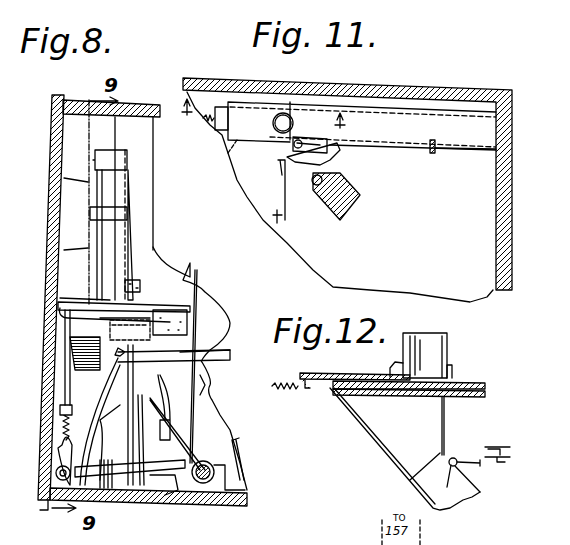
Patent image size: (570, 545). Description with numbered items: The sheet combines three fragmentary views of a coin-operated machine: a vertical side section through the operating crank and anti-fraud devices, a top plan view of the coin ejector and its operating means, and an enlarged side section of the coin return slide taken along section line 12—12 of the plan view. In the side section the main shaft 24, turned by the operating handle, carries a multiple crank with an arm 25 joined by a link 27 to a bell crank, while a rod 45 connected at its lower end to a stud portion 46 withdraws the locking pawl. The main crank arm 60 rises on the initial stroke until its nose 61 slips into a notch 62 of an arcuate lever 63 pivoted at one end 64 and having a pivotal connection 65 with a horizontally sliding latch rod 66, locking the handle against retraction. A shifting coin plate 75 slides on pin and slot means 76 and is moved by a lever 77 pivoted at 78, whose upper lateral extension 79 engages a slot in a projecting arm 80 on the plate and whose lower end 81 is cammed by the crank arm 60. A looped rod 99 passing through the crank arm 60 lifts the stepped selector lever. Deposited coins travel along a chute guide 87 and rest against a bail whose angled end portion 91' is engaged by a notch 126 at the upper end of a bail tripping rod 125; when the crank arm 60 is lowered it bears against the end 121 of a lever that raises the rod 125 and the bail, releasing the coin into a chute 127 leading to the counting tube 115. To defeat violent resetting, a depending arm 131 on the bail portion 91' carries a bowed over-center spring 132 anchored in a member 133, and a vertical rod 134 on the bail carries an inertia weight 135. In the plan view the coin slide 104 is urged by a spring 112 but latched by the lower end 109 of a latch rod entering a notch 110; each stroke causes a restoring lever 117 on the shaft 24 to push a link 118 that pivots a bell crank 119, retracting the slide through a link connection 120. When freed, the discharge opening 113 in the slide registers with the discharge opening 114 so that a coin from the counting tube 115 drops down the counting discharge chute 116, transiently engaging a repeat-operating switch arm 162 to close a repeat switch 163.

In FIG. 11, the section line 12 is at (268, 119).
In FIG. 8, the main shaft 24 is at (212, 477).
In FIG. 8, the arm 25 is at (192, 413).
In FIG. 8, the link 27 is at (202, 383).
In FIG. 8, the rod 45 is at (233, 447).
In FIG. 8, the stud portion 46 is at (218, 468).
In FIG. 8, the main crank lever arm 60 is at (172, 495).
In FIG. 8, the end portion 61 is at (88, 460).
In FIG. 8, the notch 62 is at (100, 421).
In FIG. 8, the lever 63 is at (42, 461).
In FIG. 8, the pivot 64 is at (50, 493).
In FIG. 8, the pivotal connection 65 is at (120, 355).
In FIG. 8, the latch rod 66 is at (197, 352).
In FIG. 8, the shifting coin plate 75 is at (94, 168).
In FIG. 8, the pin and slot means 76 is at (105, 170).
In FIG. 8, the lever 77 is at (95, 257).
In FIG. 8, the pivot 78 is at (130, 286).
In FIG. 8, the upper lateral extension 79 is at (108, 208).
In FIG. 8, the projecting arm 80 is at (70, 218).
In FIG. 8, the lower end 81 is at (128, 440).
In FIG. 8, the chute guide 87 is at (64, 210).
In FIG. 8, the angled end portion 91' is at (111, 326).
In FIG. 8, the double rod member 99 is at (193, 292).
In FIG. 11, the coin slide 104 is at (226, 105).
In FIG. 12, the coin slide 104 is at (310, 374).
In FIG. 11, the lower end portion 109 is at (436, 153).
In FIG. 11, the notch 110 is at (436, 143).
In FIG. 11, the spring 112 is at (208, 124).
In FIG. 12, the spring 112 is at (277, 391).
In FIG. 11, the discharge opening 113 is at (296, 118).
In FIG. 12, the discharge opening 113 is at (432, 396).
In FIG. 11, the discharge opening 114 is at (243, 152).
In FIG. 12, the discharge opening 114 is at (396, 390).
In FIG. 11, the counting tube 115 is at (286, 112).
In FIG. 12, the counting tube 115 is at (450, 352).
In FIG. 12, the counting discharge chute 116 is at (400, 472).
In FIG. 11, the depending restoring lever 117 is at (279, 222).
In FIG. 11, the link 118 is at (283, 196).
In FIG. 11, the bell crank 119 is at (333, 183).
In FIG. 11, the link connection 120 is at (312, 140).
In FIG. 8, the end 121 is at (108, 488).
In FIG. 8, the bail tripping rod 125 is at (104, 300).
In FIG. 8, the notch 126 is at (44, 302).
In FIG. 8, the chute 127 is at (76, 351).
In FIG. 8, the depending arm 131 is at (154, 378).
In FIG. 8, the over-center spring 132 is at (165, 412).
In FIG. 8, the member 133 is at (160, 462).
In FIG. 8, the vertical rod 134 is at (64, 376).
In FIG. 8, the weight 135 is at (58, 412).
In FIG. 12, the repeat-operating switch arm 162 is at (455, 455).
In FIG. 12, the repeat switch 163 is at (505, 446).